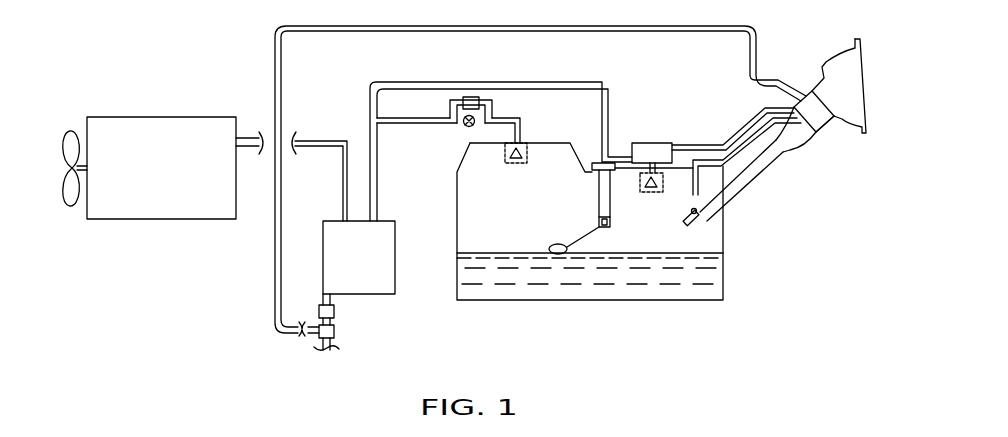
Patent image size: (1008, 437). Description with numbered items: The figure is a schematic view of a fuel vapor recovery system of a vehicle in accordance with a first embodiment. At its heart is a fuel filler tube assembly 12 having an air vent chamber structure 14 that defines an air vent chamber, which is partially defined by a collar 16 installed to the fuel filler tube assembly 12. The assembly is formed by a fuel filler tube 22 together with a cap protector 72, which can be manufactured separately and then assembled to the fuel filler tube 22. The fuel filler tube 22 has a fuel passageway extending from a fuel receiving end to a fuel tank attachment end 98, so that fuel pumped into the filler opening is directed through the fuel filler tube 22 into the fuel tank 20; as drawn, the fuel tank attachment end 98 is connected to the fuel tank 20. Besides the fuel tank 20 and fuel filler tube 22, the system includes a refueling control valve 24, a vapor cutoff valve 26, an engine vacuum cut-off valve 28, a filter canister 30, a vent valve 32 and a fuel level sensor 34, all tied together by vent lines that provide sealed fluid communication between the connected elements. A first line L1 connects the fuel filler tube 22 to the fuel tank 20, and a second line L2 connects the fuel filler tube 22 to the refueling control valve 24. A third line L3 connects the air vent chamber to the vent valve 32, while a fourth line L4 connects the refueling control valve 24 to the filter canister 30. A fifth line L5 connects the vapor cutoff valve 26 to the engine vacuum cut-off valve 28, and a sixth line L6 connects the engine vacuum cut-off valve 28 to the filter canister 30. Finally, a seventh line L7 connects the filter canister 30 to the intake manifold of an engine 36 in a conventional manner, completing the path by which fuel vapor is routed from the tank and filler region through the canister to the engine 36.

The engine 36 is at (135, 135).
The engine vacuum cut-off valve 28 is at (470, 97).
The refueling control valve 24 is at (647, 148).
The collar 16 is at (810, 101).
The cap protector 72 is at (838, 55).
The air vent chamber structure 14 is at (829, 131).
The fuel filler tube assembly 12 is at (800, 154).
The fuel filler tube 22 is at (742, 186).
The fuel tank attachment end 98 is at (703, 222).
The fuel tank 20 is at (724, 273).
The fuel level sensor 34 is at (612, 226).
The vapor cutoff valve 26 is at (527, 152).
The filter canister 30 is at (366, 258).
The vent valve 32 is at (335, 333).
The first line L1 is at (745, 148).
The second line L2 is at (747, 124).
The third line L3 is at (712, 25).
The fourth line L4 is at (578, 82).
The fifth line L5 is at (510, 117).
The sixth line L6 is at (417, 125).
The seventh line L7 is at (318, 140).